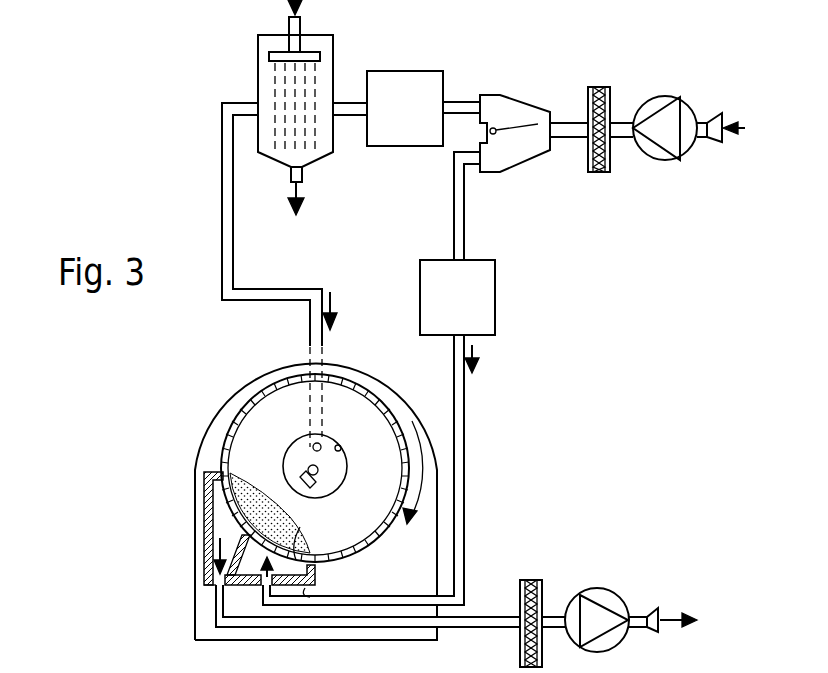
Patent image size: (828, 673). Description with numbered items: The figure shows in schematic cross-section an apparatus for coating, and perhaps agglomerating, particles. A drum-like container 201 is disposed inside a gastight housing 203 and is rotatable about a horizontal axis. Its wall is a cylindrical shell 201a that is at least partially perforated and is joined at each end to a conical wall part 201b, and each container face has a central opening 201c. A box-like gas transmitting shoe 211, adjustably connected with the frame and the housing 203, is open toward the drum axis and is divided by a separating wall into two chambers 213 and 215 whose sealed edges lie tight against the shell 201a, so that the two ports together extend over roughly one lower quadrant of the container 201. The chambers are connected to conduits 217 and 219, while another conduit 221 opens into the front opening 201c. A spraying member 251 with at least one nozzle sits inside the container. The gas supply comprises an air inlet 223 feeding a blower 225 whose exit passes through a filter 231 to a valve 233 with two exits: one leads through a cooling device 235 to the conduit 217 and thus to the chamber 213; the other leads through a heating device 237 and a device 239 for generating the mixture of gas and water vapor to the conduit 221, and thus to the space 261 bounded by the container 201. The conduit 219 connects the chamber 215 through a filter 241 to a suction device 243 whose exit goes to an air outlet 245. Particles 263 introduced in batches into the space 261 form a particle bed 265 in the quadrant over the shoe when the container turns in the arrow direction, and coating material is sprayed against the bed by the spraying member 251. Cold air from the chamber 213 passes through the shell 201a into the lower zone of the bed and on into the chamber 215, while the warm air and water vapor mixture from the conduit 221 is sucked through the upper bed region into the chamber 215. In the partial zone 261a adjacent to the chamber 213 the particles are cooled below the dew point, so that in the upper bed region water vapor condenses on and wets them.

The drum-like container 201 is at (223, 445).
The cylindrical shell 201a is at (253, 395).
The conical wall part 201b is at (295, 402).
The opening 201c is at (343, 446).
The housing 203 is at (210, 402).
The gas transmitting shoe 211 is at (205, 565).
The chamber 213 is at (303, 589).
The chamber 215 is at (222, 500).
The conduit 217 is at (466, 532).
The conduit 219 is at (483, 617).
The conduit 221 is at (233, 238).
The air inlet 223 is at (712, 142).
The blower 225 is at (658, 160).
The filter 231 is at (596, 172).
The valve 233 is at (513, 172).
The cooling device 235 is at (495, 305).
The heating device 237 is at (398, 148).
The device for generating the mixture of gas and water vapor 239 is at (258, 80).
The filter 241 is at (532, 580).
The suction device 243 is at (603, 588).
The air outlet 245 is at (652, 608).
The spraying member 251 is at (302, 477).
The space 261 is at (372, 420).
The partial zone 261a is at (290, 523).
The particles 263 is at (259, 492).
The particle bed 265 is at (308, 560).